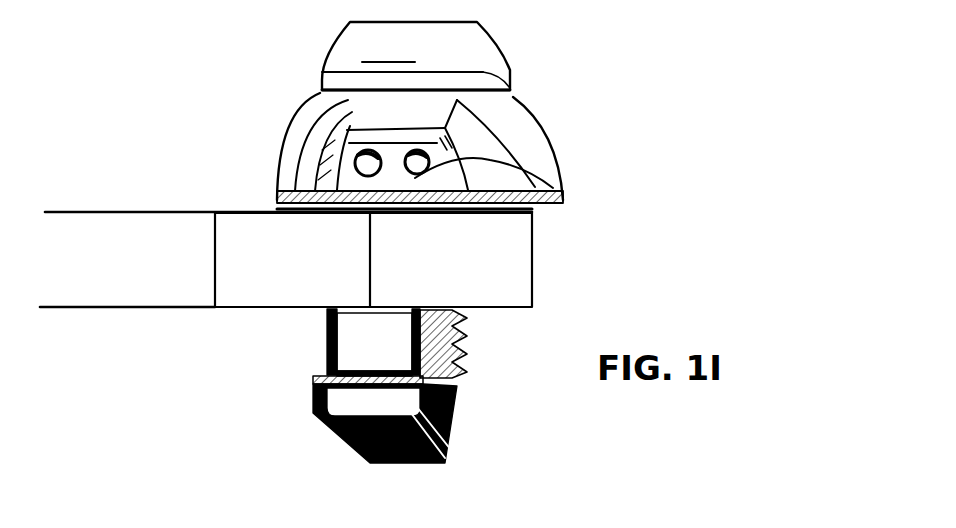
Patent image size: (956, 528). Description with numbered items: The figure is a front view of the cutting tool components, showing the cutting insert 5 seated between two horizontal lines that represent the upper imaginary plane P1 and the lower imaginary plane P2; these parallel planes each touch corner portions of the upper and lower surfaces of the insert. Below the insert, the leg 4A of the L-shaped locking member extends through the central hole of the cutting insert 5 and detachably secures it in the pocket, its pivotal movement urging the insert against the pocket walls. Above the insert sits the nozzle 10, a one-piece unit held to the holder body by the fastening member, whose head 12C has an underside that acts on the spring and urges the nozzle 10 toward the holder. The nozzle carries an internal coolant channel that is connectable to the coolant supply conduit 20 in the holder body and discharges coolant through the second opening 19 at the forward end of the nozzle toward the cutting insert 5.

The head 12C is at (482, 37).
The coolant supply conduit 20 is at (512, 89).
The nozzle 10 is at (555, 131).
The second opening 19 is at (560, 193).
The cutting insert 5 is at (510, 270).
The leg 4A is at (367, 343).
The upper imaginary plane P1 is at (83, 211).
The lower imaginary plane P2 is at (82, 309).